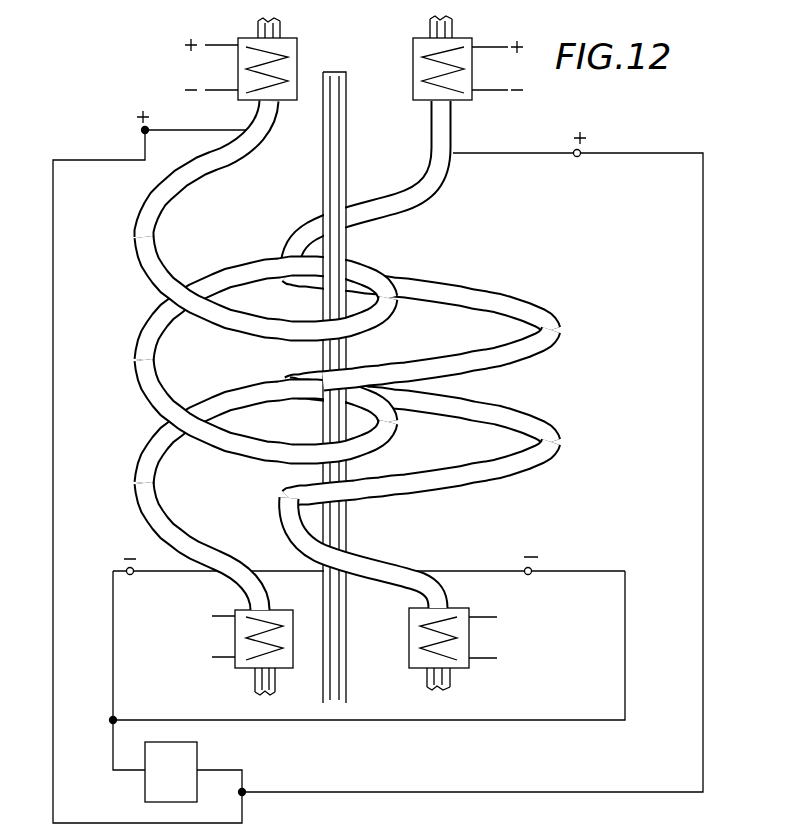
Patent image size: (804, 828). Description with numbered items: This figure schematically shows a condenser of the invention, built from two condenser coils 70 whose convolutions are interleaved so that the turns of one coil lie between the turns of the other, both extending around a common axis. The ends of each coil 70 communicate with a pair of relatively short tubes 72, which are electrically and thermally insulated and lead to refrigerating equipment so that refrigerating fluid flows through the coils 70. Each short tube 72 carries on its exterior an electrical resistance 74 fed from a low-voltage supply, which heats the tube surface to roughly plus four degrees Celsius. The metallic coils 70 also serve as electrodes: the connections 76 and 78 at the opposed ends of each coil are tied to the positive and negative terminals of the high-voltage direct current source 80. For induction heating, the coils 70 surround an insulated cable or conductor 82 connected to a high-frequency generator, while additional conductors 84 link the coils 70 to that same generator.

The condenser coils 70 is at (331, 387).
The short tubes 72 is at (288, 63).
The electrical resistance 74 is at (262, 671).
The connection 76 is at (205, 115).
The connection 78 is at (167, 573).
The direct current source of high voltage 80 is at (186, 786).
The insulated cable or conductor 82 is at (338, 108).
The additional conductors 84 is at (334, 387).